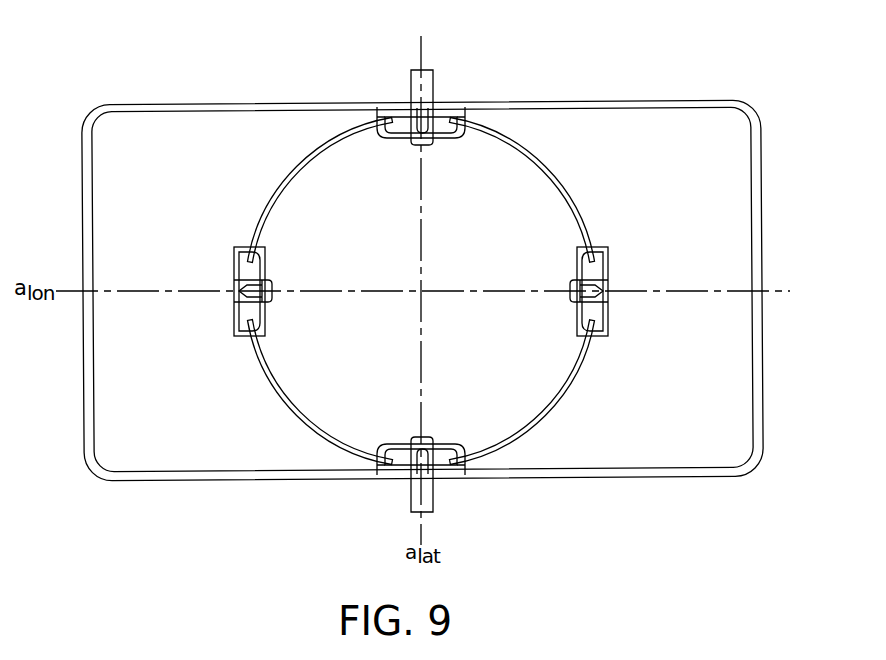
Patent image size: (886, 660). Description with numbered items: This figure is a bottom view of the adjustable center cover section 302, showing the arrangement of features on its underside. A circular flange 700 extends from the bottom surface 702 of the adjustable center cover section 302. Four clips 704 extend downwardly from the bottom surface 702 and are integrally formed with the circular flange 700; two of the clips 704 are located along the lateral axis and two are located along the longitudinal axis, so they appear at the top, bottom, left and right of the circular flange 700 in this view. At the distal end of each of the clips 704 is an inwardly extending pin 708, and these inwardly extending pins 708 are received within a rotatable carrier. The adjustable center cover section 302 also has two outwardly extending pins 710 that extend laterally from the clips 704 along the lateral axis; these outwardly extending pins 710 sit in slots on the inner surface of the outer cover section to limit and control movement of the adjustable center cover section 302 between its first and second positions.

The adjustable center cover section 302 is at (725, 163).
The circular flange 700 is at (312, 150).
The bottom surface 702 is at (143, 443).
The clips 704 is at (238, 248).
The inwardly extending pin 708 is at (428, 139).
The outwardly extending pins 710 is at (433, 82).